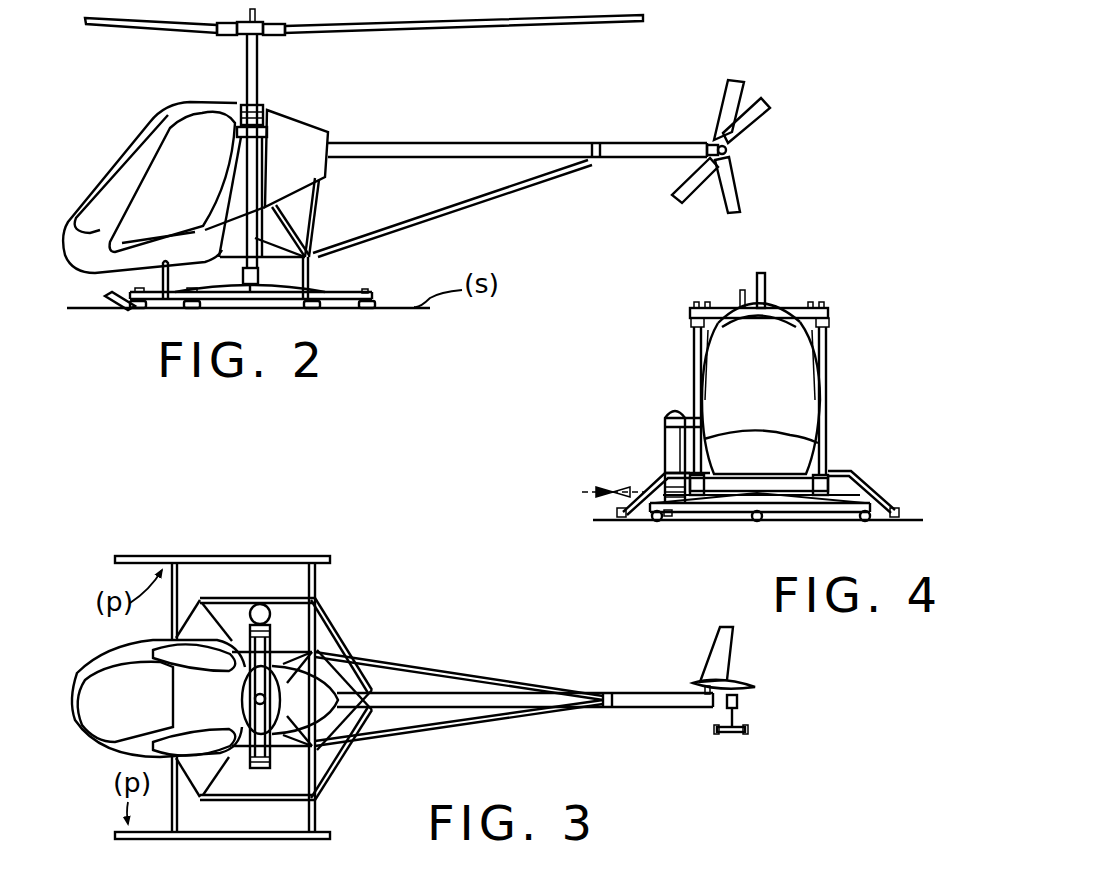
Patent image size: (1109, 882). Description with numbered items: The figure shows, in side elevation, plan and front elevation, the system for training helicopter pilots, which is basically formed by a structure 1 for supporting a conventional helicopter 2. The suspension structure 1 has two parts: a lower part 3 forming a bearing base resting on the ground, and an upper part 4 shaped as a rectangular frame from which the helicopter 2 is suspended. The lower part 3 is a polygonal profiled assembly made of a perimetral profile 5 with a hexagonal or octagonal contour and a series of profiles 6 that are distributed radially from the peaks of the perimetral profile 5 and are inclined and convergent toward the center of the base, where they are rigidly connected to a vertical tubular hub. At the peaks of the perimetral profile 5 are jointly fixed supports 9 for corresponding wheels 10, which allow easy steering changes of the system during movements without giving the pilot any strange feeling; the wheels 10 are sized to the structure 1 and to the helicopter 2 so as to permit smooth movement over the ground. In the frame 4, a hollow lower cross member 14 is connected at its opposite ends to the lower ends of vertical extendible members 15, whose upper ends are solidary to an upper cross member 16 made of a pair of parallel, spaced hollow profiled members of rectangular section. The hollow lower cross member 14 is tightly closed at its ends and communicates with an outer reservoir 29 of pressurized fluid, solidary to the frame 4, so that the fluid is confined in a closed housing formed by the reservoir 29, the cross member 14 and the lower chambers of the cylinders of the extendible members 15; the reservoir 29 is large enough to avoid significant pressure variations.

In FIG. 2, the structure for supporting the helicopter 1 is at (236, 273).
In FIG. 4, the structure for supporting the helicopter 1 is at (681, 373).
In FIG. 3, the structure for supporting the helicopter 1 is at (338, 794).
In FIG. 2, the helicopter 2 is at (200, 103).
In FIG. 4, the helicopter 2 is at (771, 395).
In FIG. 2, the lower part 3 is at (325, 290).
In FIG. 4, the lower part 3 is at (727, 507).
In FIG. 3, the lower part 3 is at (344, 623).
In FIG. 2, the upper part 4 is at (243, 182).
In FIG. 4, the upper part 4 is at (689, 353).
In FIG. 3, the perimetral profile 5 is at (258, 801).
In FIG. 3, the profiles 6 is at (220, 636).
In FIG. 2, the supports 9 is at (375, 295).
In FIG. 4, the supports 9 is at (670, 522).
In FIG. 2, the wheels 10 is at (366, 308).
In FIG. 4, the wheels 10 is at (655, 522).
In FIG. 4, the hollow lower cross member 14 is at (810, 470).
In FIG. 4, the vertical extendible members 15 is at (693, 385).
In FIG. 4, the upper cross member 16 is at (798, 310).
In FIG. 4, the outer reservoir 29 is at (672, 447).